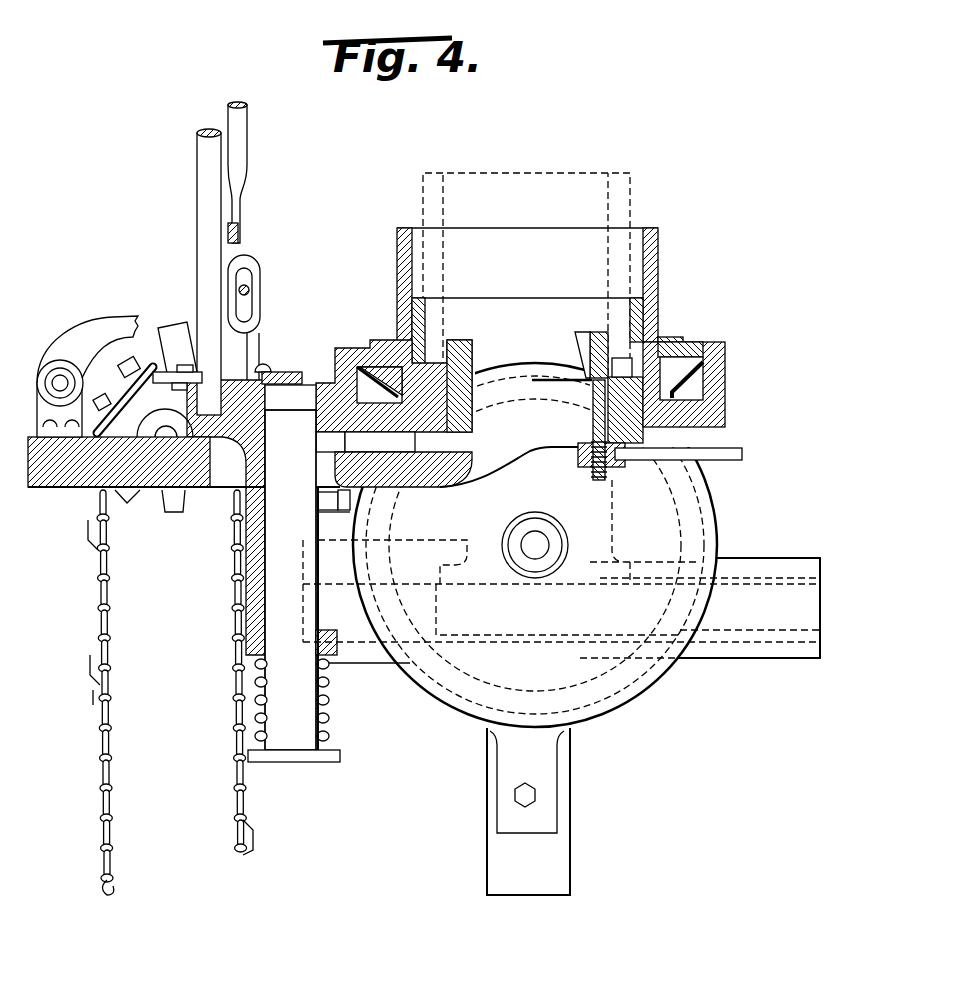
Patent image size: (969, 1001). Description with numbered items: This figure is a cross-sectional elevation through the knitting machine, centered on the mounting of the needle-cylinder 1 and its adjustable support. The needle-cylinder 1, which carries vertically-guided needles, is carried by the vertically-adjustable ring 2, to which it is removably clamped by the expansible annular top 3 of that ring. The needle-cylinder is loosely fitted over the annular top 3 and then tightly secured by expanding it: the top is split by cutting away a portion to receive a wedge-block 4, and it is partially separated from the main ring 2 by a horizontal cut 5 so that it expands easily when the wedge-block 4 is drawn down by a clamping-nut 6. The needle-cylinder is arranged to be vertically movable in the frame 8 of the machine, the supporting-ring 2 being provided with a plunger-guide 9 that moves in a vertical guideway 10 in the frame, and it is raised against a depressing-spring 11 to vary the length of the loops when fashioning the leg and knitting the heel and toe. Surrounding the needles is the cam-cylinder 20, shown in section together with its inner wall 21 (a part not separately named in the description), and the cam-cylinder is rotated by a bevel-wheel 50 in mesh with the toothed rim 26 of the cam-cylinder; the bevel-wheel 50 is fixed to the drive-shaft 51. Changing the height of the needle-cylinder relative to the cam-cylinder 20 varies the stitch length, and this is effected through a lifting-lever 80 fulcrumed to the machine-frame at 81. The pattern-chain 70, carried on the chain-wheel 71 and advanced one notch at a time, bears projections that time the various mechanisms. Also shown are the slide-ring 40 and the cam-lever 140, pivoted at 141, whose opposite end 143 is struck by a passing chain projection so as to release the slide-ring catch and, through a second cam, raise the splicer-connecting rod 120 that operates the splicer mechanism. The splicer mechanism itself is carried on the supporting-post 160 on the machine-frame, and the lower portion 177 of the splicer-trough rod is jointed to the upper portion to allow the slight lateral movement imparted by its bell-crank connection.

The needle-cylinder 1 is at (632, 206).
The vertically-adjustable ring 2 is at (472, 428).
The expansible annular top 3 is at (472, 357).
The wedge-block 4 is at (597, 334).
The horizontal cut 5 is at (545, 380).
The clamping-nut 6 is at (577, 462).
The frame 8 is at (726, 408).
The plunger-guide 9 is at (329, 586).
The vertical guideway 10 is at (251, 565).
The depressing-spring 11 is at (330, 702).
The cam-cylinder 20 is at (413, 280).
The inner cylinder wall 21 is at (425, 312).
The toothed rim 26 is at (725, 371).
The slide-ring 40 is at (673, 336).
The bevel-wheel 50 is at (708, 500).
The drive-shaft 51 is at (535, 545).
The pattern-chain 70 is at (108, 584).
The chain-wheel 71 is at (146, 414).
The lifting-lever 80 is at (334, 517).
The fulcrum of lifting-lever 81 is at (345, 513).
The splicer-connecting rod 120 is at (250, 293).
The cam-lever 140 is at (291, 374).
The pivot of cam-lever 141 is at (268, 367).
The opposite end of cam-lever 143 is at (170, 333).
The supporting-post 160 is at (198, 170).
The lower portion of splicer-trough rod 177 is at (239, 138).